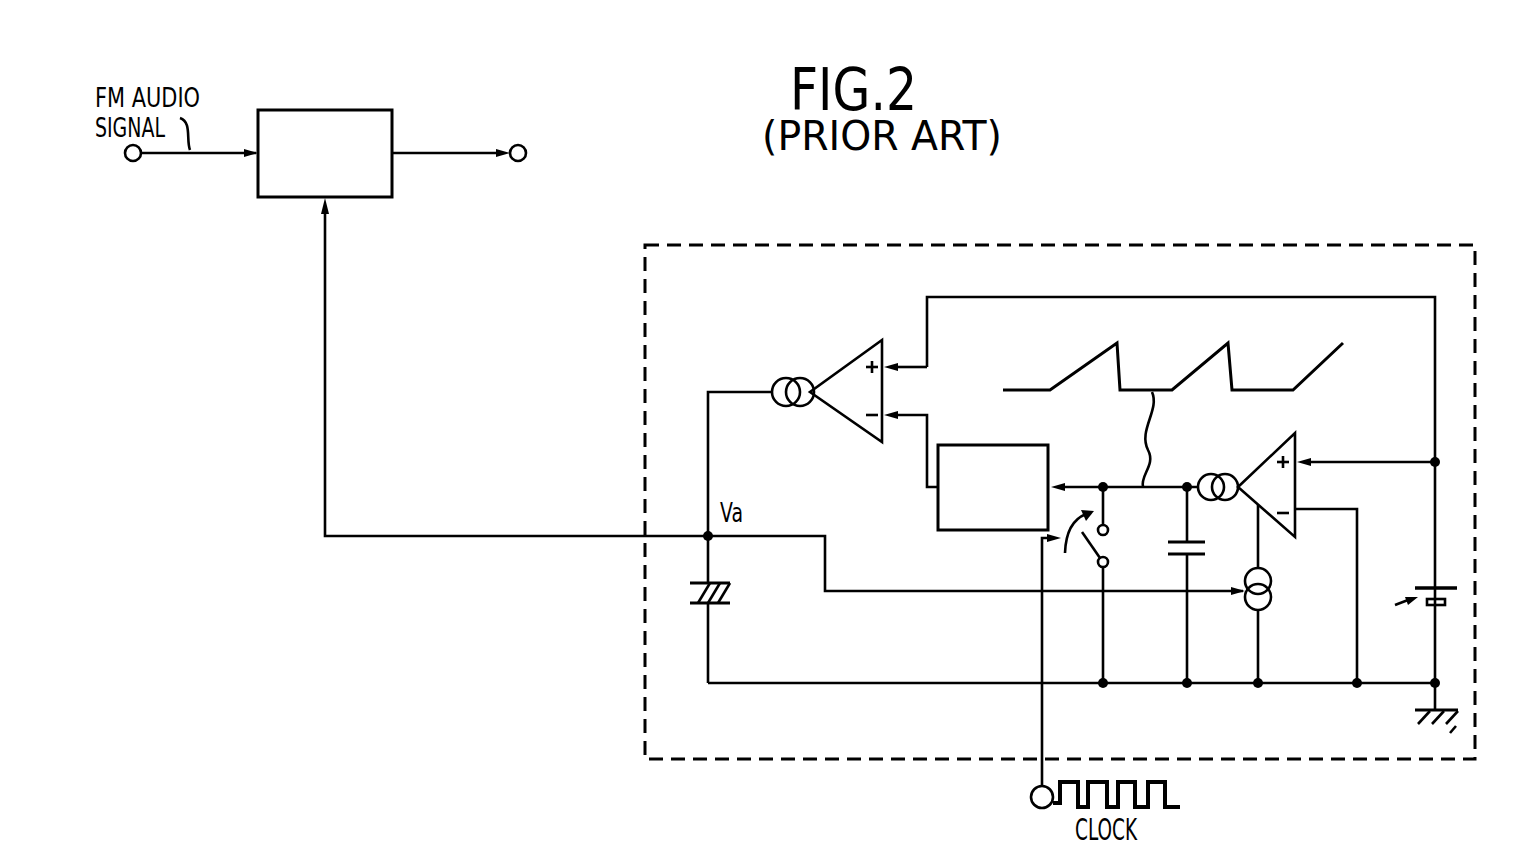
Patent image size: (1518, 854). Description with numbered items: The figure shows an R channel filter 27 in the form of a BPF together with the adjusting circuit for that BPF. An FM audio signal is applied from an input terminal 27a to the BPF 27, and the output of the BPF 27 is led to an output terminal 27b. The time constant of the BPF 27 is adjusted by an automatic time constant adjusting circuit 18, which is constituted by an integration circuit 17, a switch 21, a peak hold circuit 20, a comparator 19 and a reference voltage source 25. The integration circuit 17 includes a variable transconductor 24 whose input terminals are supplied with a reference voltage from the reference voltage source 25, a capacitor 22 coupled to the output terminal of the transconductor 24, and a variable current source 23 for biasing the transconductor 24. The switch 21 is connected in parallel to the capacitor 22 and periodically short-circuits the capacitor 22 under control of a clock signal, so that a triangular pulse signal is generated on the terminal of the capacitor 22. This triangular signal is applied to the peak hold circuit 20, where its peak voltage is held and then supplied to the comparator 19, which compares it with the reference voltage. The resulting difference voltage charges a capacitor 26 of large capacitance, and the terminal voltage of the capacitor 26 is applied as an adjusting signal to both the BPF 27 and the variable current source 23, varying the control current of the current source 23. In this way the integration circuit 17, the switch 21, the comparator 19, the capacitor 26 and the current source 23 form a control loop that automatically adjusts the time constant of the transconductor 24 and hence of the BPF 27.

The integration circuit 17 is at (1244, 542).
The automatic time constant adjusting circuit 18 is at (1150, 243).
The comparator 19 is at (837, 365).
The peak hold circuit 20 is at (957, 447).
The switch 21 is at (1118, 542).
The capacitor 22 is at (1158, 560).
The variable current source 23 is at (1273, 580).
The variable transconductor 24 is at (1253, 462).
The reference voltage source 25 is at (1420, 582).
The capacitor 26 is at (732, 591).
The R channel filter 27 is at (378, 128).
The input terminal 27a is at (137, 161).
The output terminal 27b is at (522, 160).